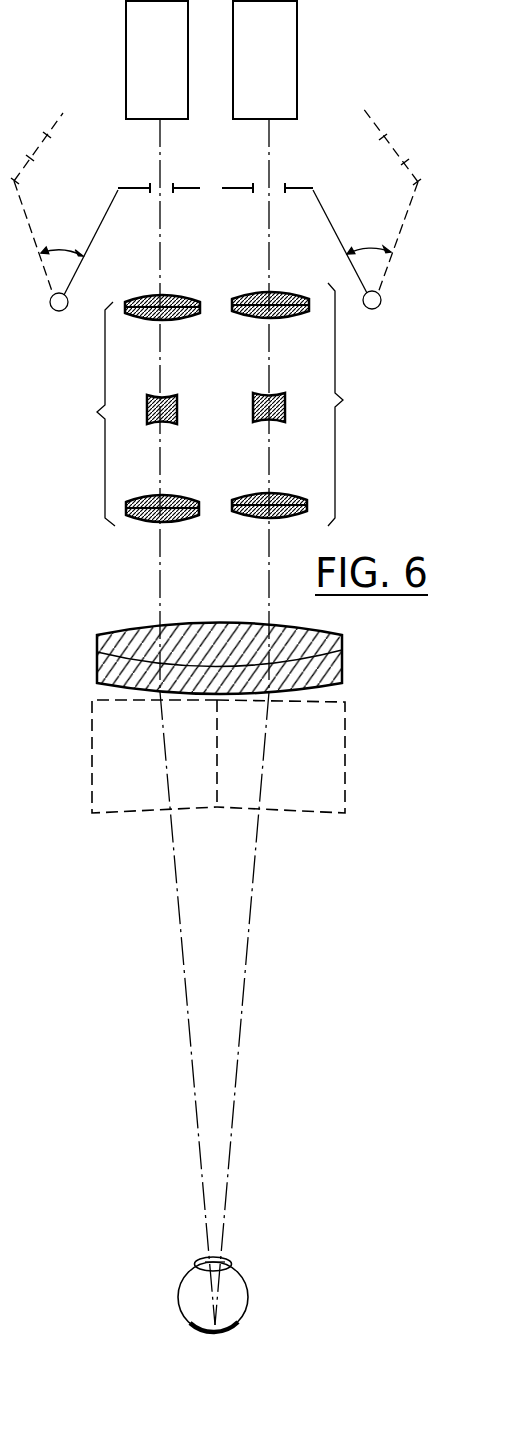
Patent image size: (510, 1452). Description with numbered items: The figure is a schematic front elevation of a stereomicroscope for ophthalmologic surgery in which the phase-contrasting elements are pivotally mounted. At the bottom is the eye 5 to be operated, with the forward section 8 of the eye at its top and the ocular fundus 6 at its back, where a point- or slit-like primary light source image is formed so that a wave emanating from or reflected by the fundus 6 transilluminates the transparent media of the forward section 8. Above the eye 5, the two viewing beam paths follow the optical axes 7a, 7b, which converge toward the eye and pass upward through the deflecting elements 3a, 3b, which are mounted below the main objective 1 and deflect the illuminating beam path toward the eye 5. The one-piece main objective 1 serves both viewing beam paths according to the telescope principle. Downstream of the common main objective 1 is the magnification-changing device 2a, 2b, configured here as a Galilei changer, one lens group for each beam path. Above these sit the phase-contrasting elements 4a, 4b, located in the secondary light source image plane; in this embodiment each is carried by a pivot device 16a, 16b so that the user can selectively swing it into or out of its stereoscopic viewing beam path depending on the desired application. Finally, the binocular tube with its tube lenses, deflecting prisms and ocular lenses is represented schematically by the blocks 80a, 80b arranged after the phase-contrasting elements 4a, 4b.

The main objective 1 is at (342, 668).
The magnification-changing device 2a is at (304, 404).
The magnification-changing device 2b is at (126, 410).
The deflecting element 3a is at (332, 753).
The deflecting element 3b is at (100, 757).
The phase-contrasting element 4a is at (295, 184).
The phase-contrasting element 4b is at (138, 188).
The eye 5 is at (247, 1286).
The ocular fundus 6 is at (212, 1336).
The optical axis 7a is at (183, 958).
The optical axis 7b is at (248, 955).
The forward section of the eye 8 is at (225, 1266).
The pivot device 16a is at (375, 309).
The pivot device 16b is at (57, 311).
The binocular tube 80a is at (298, 118).
The binocular tube 80b is at (128, 89).